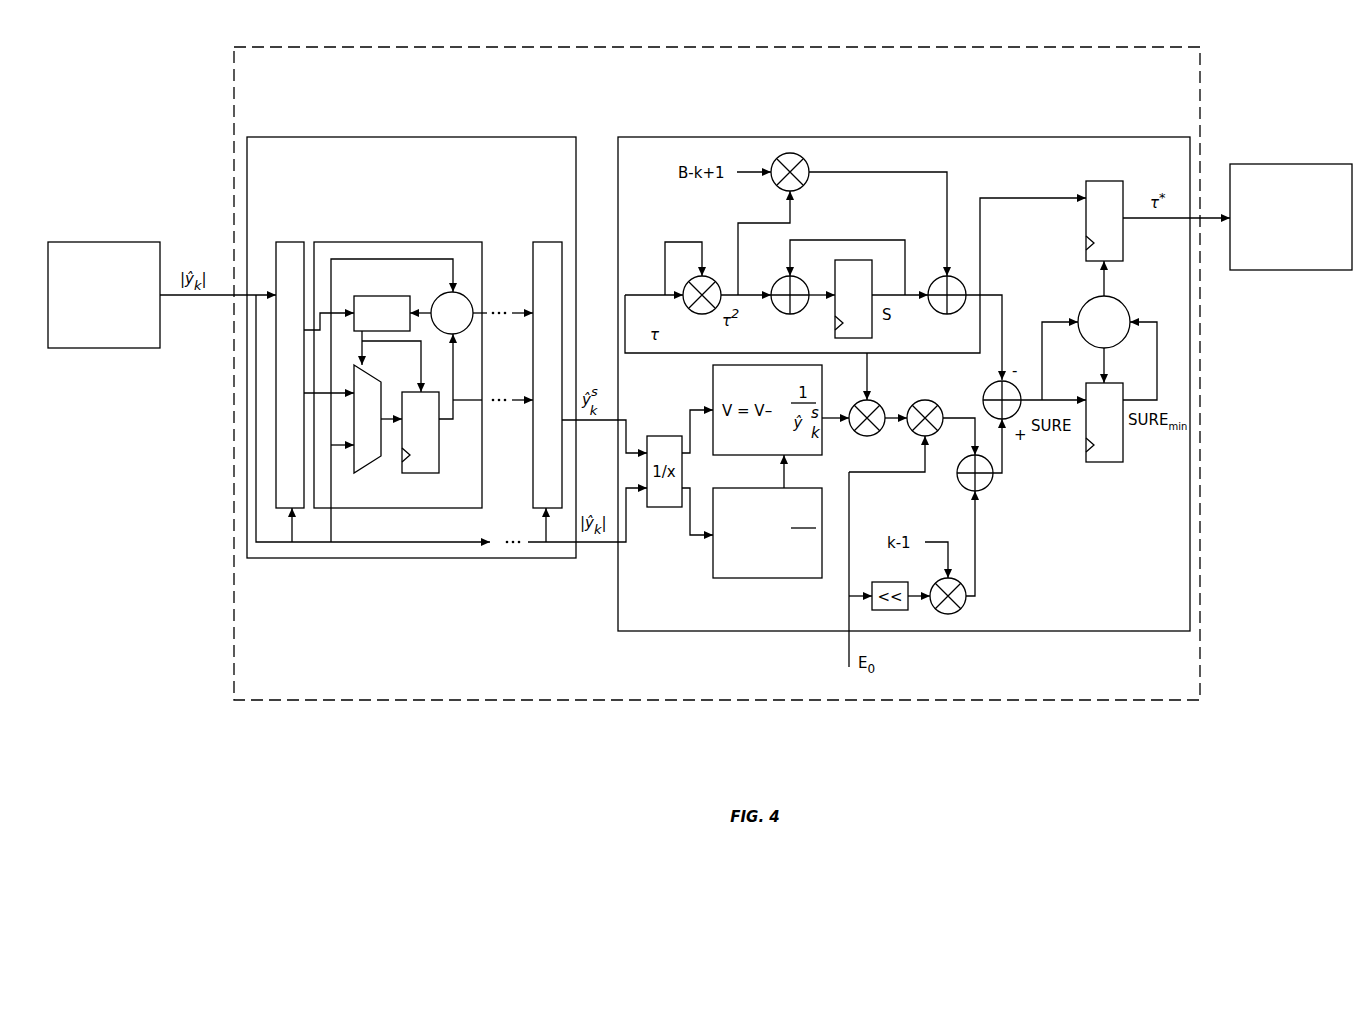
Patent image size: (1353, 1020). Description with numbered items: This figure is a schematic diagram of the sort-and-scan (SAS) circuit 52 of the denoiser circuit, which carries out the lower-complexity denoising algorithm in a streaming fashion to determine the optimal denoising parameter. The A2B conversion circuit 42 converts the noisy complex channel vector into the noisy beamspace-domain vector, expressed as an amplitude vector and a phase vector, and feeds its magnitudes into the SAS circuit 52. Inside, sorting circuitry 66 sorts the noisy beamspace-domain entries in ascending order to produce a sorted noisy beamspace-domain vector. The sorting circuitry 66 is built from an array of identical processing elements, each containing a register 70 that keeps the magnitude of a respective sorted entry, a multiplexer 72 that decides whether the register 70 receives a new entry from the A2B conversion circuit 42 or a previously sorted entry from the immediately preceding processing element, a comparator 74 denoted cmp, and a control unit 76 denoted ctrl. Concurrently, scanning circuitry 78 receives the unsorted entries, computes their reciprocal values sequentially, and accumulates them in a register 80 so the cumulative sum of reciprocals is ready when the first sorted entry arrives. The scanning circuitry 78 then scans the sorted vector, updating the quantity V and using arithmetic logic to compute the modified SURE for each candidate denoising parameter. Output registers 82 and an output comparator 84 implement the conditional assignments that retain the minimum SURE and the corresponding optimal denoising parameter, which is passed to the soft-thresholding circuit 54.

The A2B conversion circuit 42 is at (104, 295).
The sort-and-scan (SAS) circuit 52 is at (717, 373).
The soft-thresholding circuit 54 is at (1291, 217).
The sorting circuitry 66 is at (494, 117).
The register 70 is at (420, 432).
The multiplexer 72 is at (378, 419).
The comparator 74 is at (443, 293).
The control unit 76 is at (383, 295).
The scanning circuitry 78 is at (1046, 115).
The register 80 is at (745, 578).
The output registers 82 is at (1100, 181).
The output comparator 84 is at (1088, 300).